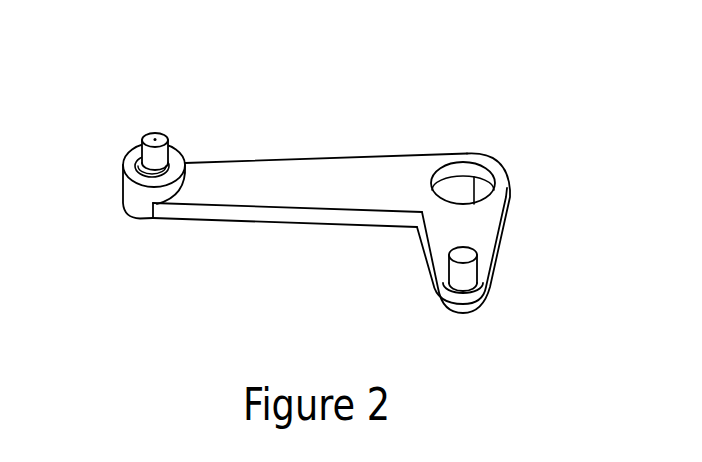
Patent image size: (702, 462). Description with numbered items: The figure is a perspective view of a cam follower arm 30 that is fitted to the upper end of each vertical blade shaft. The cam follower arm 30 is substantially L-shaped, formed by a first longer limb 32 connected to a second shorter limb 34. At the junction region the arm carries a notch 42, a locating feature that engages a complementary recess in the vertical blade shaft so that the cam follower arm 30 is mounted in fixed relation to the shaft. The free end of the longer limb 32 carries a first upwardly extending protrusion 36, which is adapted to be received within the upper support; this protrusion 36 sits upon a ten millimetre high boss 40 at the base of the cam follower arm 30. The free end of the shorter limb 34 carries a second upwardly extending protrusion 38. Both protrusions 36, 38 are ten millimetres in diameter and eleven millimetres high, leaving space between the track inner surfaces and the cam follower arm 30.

The cam follower arm 30 is at (316, 188).
The first longer limb 32 is at (273, 240).
The second shorter limb 34 is at (482, 236).
The first upwardly extending protrusion 36 is at (139, 134).
The second upwardly extending protrusion 38 is at (438, 282).
The boss 40 is at (133, 172).
The notch 42 is at (485, 186).